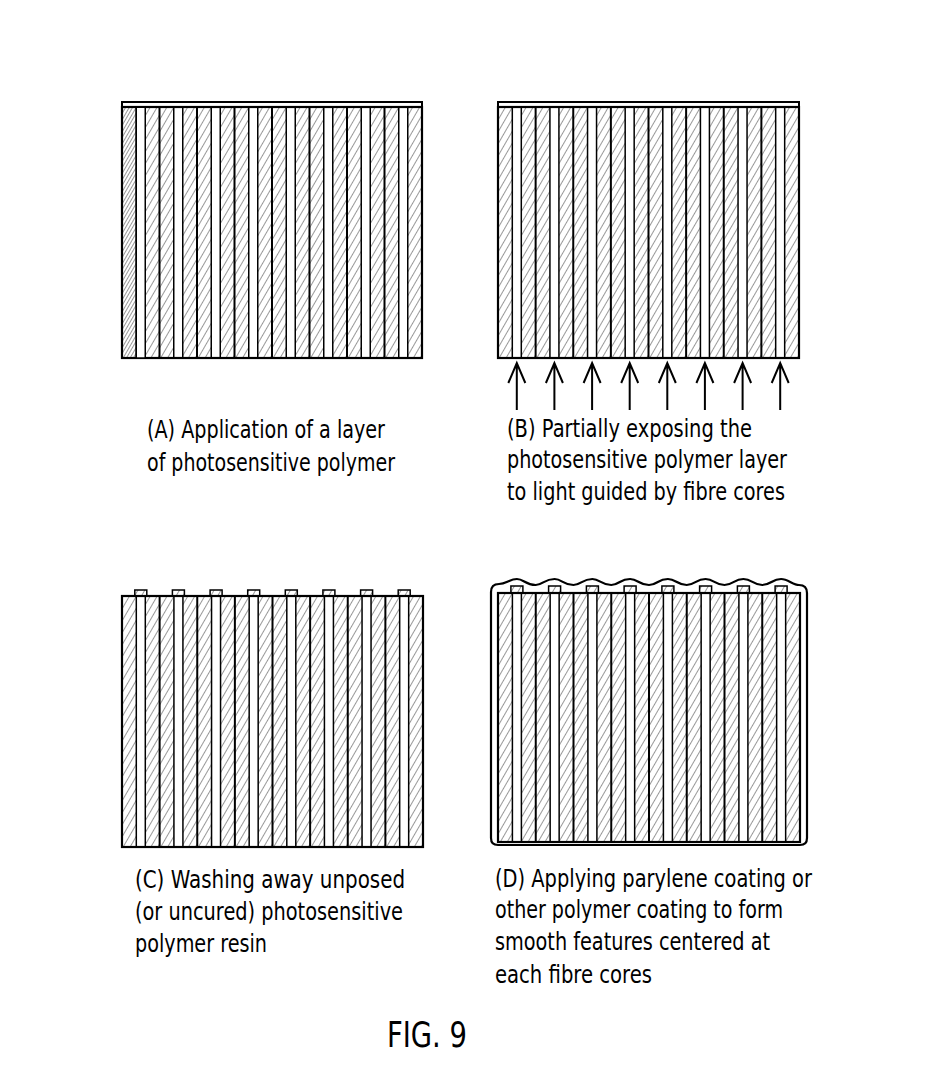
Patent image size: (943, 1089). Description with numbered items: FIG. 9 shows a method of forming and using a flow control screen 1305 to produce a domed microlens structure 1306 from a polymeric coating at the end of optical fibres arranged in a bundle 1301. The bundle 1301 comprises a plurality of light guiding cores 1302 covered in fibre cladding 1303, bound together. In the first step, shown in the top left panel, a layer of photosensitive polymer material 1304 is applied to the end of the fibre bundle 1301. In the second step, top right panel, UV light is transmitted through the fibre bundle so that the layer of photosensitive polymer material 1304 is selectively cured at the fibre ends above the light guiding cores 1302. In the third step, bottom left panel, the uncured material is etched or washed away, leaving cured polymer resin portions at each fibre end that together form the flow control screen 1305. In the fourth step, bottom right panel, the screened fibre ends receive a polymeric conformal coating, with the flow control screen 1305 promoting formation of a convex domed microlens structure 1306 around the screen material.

The bundle 1301 is at (108, 186).
The light guiding cores 1302 is at (128, 370).
The fibre cladding 1303 is at (115, 300).
The layer of photosensitive polymer material 1304 is at (114, 90).
The flow control screen 1305 is at (125, 580).
The domed microlens structure 1306 is at (755, 580).